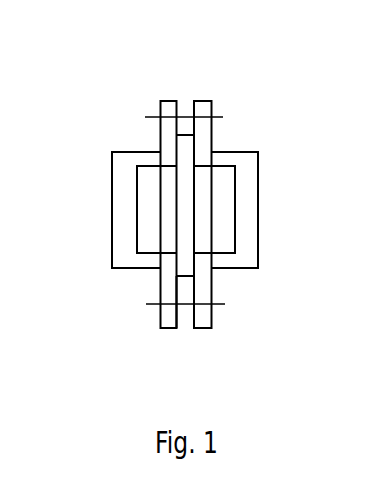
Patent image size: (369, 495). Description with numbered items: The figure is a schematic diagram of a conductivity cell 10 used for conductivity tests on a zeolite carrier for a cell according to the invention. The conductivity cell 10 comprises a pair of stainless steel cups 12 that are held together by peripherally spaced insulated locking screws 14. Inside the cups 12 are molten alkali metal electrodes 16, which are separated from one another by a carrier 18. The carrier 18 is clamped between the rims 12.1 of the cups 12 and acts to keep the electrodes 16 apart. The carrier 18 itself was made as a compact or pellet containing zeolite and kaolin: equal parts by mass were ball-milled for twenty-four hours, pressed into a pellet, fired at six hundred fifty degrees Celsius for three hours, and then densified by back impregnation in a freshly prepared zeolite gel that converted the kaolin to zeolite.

The conductivity cell 10 is at (214, 81).
The stainless steel cups 12 is at (118, 242).
The rims 12.1 is at (205, 128).
The insulated locking screws 14 is at (108, 117).
The molten alkali metal electrodes 16 is at (142, 182).
The carrier 18 is at (188, 267).